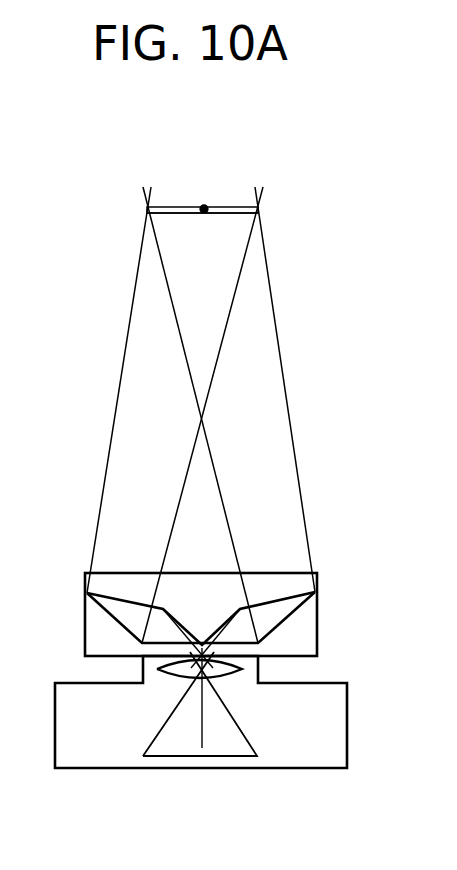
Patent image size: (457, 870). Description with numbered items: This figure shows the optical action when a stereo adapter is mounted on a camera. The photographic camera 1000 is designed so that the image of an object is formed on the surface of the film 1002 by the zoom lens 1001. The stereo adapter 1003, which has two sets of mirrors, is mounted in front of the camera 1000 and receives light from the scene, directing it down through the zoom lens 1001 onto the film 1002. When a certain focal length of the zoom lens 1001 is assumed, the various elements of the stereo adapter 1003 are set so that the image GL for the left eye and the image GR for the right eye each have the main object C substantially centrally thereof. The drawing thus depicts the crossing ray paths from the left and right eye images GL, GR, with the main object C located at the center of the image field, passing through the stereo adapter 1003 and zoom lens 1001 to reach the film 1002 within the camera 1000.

The image for the right eye GR is at (225, 207).
The image for the left eye GL is at (185, 214).
The main object C is at (204, 205).
The photographic camera 1000 is at (302, 750).
The zoom lens 1001 is at (244, 672).
The film 1002 is at (177, 758).
The stereo adapter 1003 is at (303, 631).